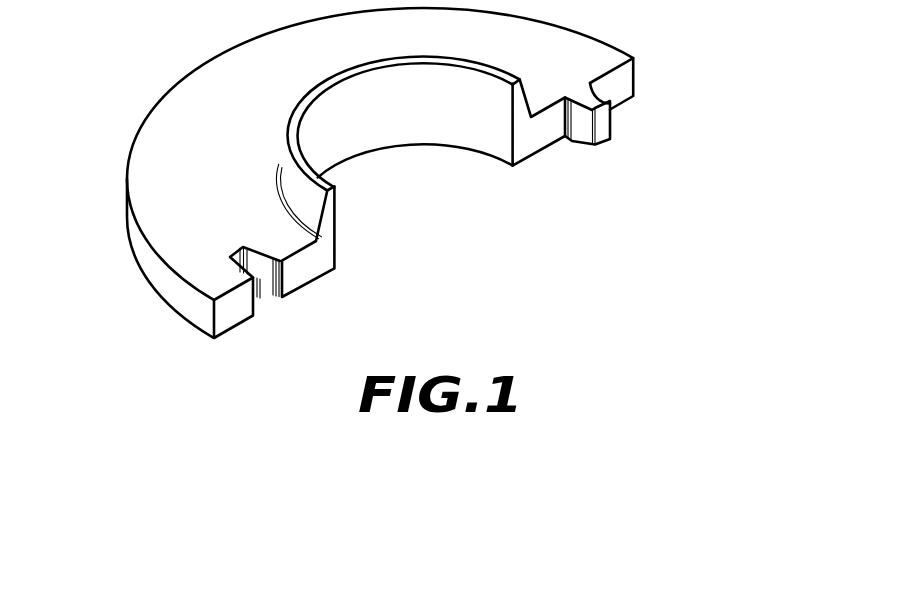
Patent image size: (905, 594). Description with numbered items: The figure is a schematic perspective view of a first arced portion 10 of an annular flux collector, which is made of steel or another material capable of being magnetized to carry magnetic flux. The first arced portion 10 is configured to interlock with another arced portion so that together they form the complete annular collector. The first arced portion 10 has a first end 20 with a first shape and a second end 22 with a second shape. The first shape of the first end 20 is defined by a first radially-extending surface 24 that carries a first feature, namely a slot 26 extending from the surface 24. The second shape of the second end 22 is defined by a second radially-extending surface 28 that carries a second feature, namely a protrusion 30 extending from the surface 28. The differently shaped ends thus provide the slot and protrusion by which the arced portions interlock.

The first arced portion 10 is at (244, 79).
The first end 20 is at (306, 290).
The second end 22 is at (614, 116).
The first radially-extending surface 24 is at (314, 266).
The slot 26 is at (261, 277).
The second radially-extending surface 28 is at (628, 103).
The protrusion 30 is at (603, 128).